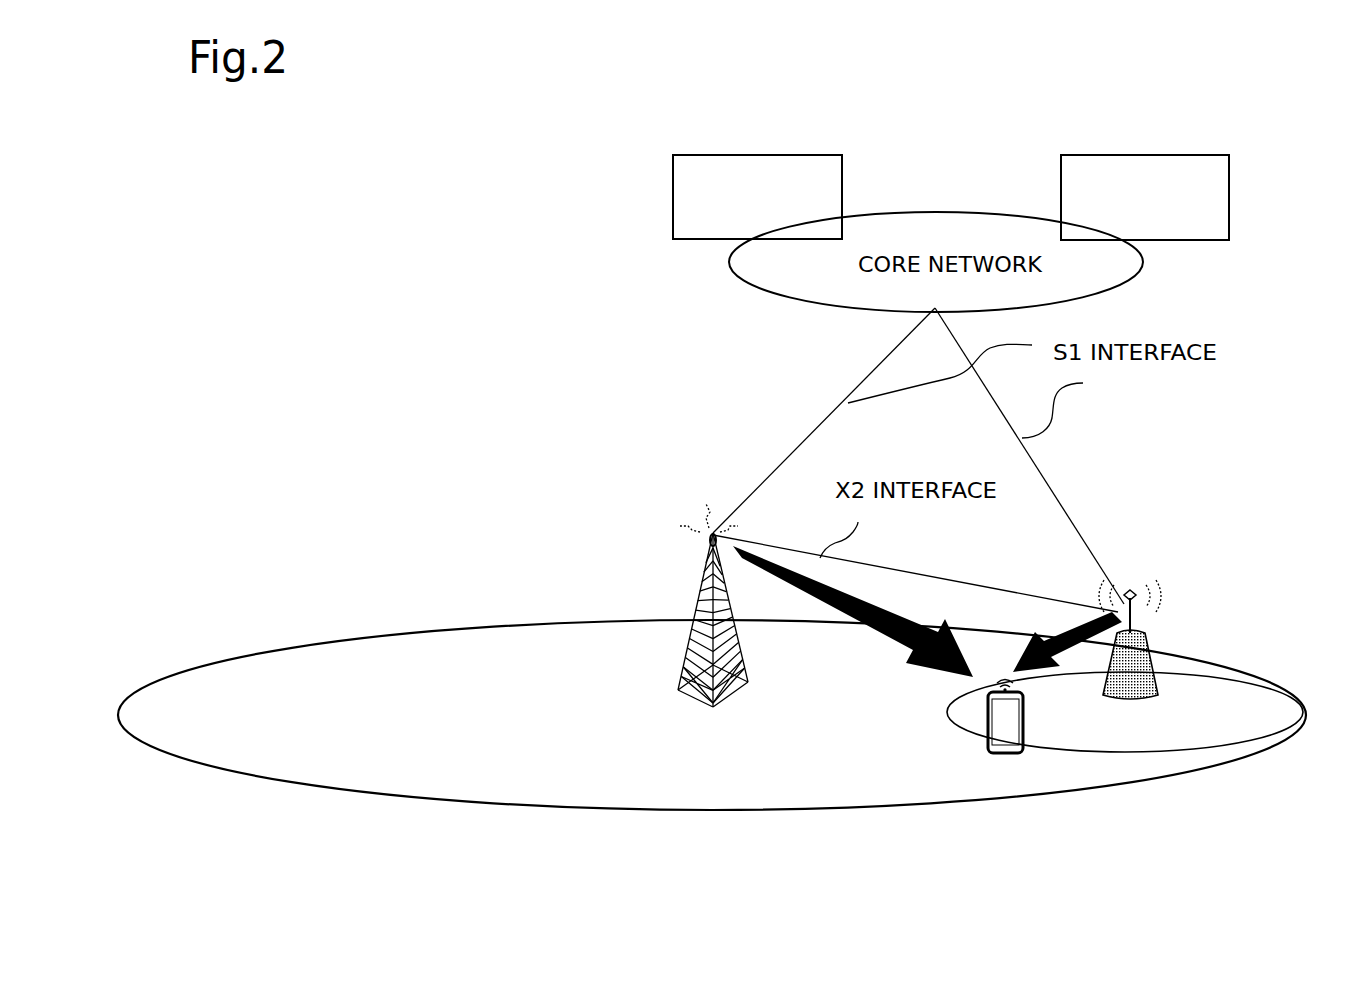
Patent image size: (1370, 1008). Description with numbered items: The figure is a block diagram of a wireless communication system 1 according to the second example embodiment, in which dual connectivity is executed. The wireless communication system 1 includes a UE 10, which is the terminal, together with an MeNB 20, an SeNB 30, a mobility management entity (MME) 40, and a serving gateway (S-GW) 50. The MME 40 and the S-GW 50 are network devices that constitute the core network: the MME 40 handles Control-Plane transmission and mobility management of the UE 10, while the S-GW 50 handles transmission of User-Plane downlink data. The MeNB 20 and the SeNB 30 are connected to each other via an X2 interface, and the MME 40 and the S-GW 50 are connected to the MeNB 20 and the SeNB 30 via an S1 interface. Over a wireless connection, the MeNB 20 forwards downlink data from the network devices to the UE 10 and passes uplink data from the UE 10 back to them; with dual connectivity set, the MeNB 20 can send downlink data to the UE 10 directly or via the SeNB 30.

The wireless communication system 1 is at (1008, 100).
The UE 10 is at (1013, 755).
The MeNB 20 is at (682, 585).
The SeNB 30 is at (1157, 620).
The mobility management entity (MME) 40 is at (673, 180).
The serving gateway (S-GW) 50 is at (1229, 178).